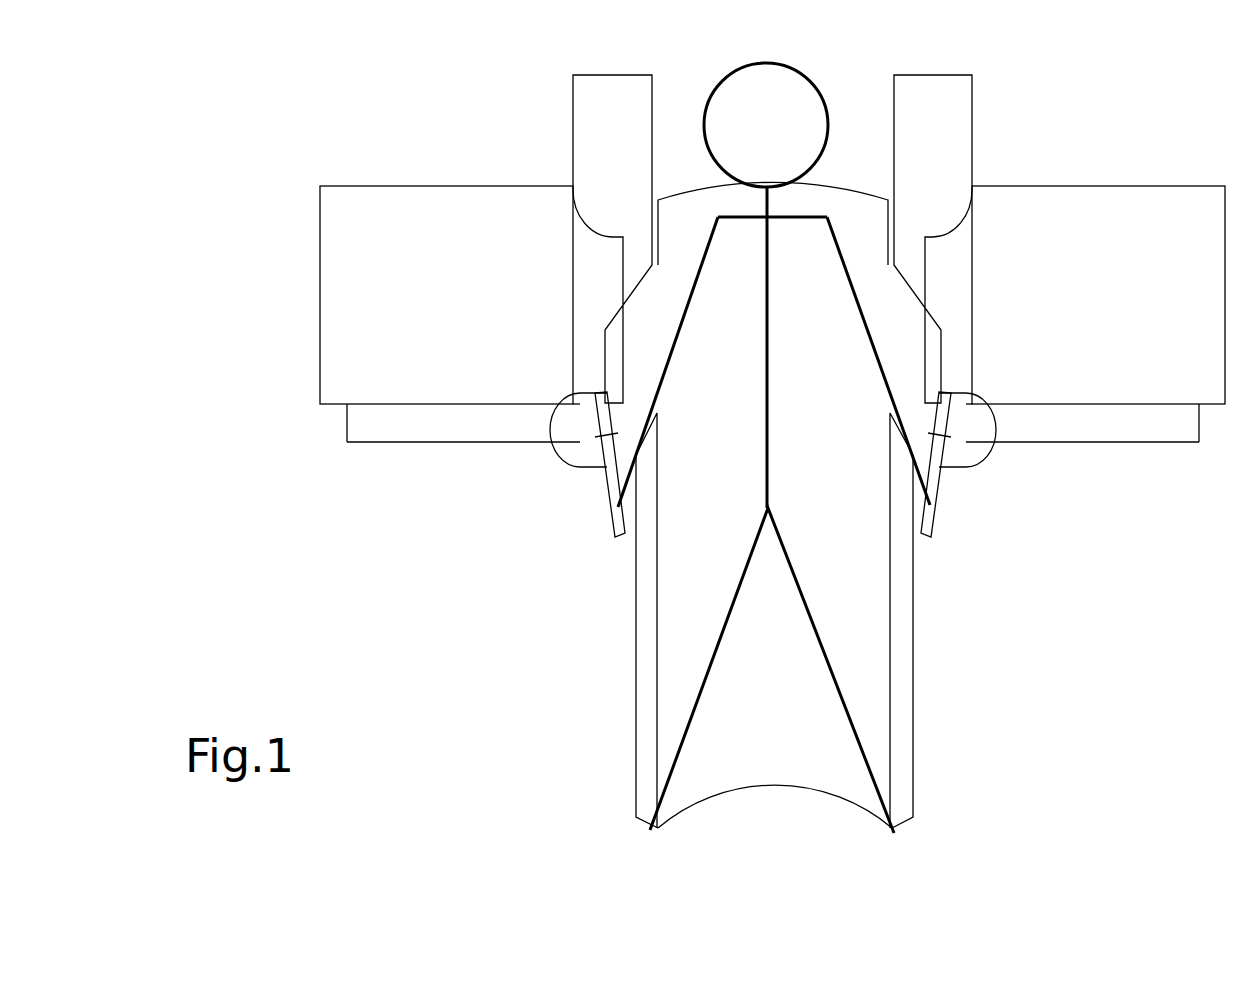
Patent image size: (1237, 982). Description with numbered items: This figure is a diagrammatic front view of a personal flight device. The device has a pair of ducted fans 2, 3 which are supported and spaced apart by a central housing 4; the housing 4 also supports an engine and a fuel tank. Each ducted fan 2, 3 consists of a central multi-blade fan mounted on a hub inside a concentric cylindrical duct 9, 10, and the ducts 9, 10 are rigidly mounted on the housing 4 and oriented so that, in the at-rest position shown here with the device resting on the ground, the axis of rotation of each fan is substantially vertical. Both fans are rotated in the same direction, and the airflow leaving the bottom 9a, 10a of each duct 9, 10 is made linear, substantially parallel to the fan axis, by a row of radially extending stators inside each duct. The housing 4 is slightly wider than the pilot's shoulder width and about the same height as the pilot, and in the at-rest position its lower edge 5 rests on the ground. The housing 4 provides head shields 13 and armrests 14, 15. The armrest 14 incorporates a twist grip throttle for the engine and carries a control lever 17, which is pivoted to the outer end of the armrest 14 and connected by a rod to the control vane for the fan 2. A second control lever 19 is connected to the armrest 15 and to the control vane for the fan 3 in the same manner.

The ducted fan 2 is at (470, 310).
The ducted fan 3 is at (1073, 306).
The central housing 4 is at (772, 448).
The lower edge of the housing 5 is at (698, 800).
The cylindrical duct 9 is at (446, 295).
The bottom of the duct 9a is at (347, 418).
The cylindrical duct 10 is at (1098, 295).
The bottom of the duct 10a is at (1160, 408).
The head shields 13 is at (887, 82).
The armrest 14 is at (605, 463).
The armrest 15 is at (940, 462).
The control lever 17 is at (613, 518).
The control lever 19 is at (948, 514).